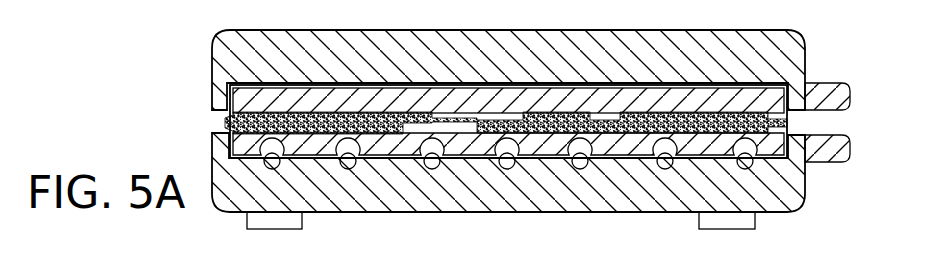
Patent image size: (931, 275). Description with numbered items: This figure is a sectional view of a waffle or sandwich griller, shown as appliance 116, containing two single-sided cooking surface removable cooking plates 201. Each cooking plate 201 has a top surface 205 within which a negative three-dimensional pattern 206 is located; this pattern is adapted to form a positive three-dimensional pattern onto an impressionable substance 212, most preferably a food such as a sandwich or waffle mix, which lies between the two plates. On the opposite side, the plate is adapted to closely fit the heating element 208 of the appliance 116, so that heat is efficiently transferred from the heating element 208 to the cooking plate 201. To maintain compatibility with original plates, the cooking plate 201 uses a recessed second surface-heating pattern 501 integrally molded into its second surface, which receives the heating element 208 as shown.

The appliance 116 is at (203, 48).
The removable cooking plate 201 is at (465, 120).
The top surface 205 is at (373, 112).
The negative three-dimensional pattern 206 is at (562, 110).
The impressionable substance 212 is at (677, 117).
The heating element 208 is at (665, 169).
The second surface-heating pattern 501 is at (377, 150).